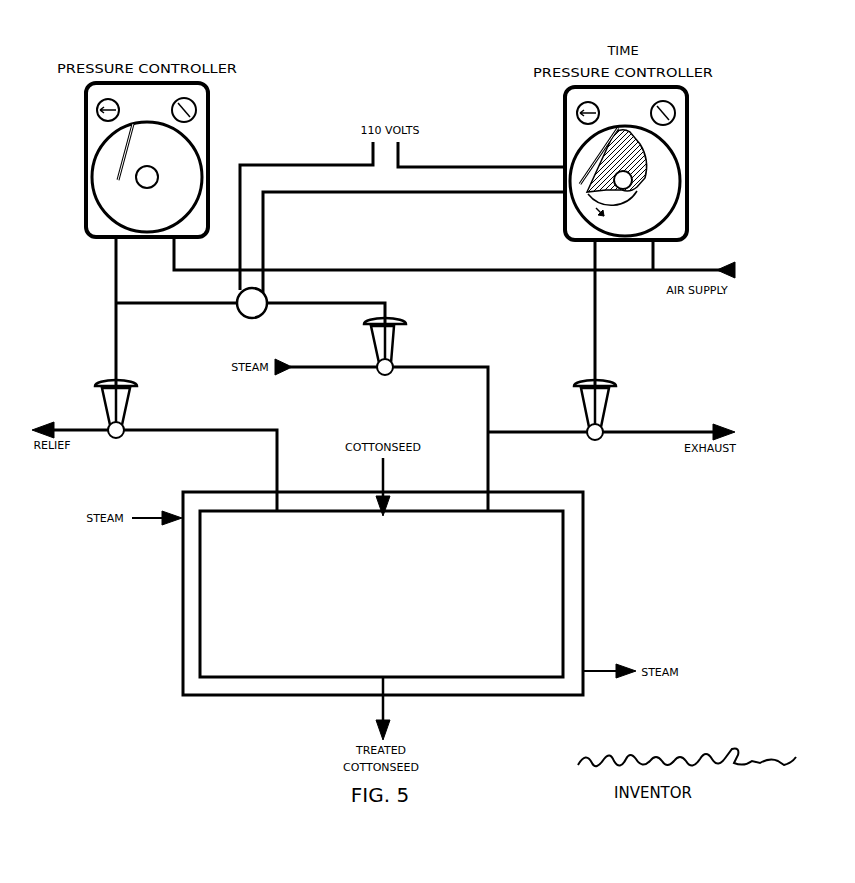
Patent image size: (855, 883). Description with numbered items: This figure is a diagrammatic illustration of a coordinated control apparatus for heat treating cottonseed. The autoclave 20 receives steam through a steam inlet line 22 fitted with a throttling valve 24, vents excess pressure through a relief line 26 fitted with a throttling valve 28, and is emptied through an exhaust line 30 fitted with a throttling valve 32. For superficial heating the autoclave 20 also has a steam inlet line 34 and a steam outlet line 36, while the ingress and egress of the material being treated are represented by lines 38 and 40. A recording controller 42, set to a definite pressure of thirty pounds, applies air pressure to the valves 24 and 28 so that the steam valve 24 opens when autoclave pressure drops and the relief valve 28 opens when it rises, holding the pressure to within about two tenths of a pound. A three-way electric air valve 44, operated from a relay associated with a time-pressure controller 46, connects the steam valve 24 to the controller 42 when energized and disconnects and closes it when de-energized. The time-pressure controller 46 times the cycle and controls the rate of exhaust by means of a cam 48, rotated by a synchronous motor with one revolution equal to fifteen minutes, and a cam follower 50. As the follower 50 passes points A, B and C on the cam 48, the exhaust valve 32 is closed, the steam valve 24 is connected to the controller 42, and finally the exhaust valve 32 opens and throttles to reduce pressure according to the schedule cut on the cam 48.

The autoclave 20 is at (358, 634).
The steam inlet line 22 is at (303, 364).
The throttling valve 24 is at (400, 346).
The relief line 26 is at (183, 428).
The throttling valve 28 is at (132, 410).
The exhaust line 30 is at (510, 430).
The throttling valve 32 is at (608, 415).
The steam inlet line 34 is at (153, 506).
The steam outlet line 36 is at (592, 668).
The line 38 is at (387, 478).
The line 40 is at (388, 707).
The recording controller 42 is at (207, 125).
The 3-way electric air valve 44 is at (240, 312).
The time-pressure controller 46 is at (685, 130).
The cam 48 is at (643, 150).
The cam follower 50 is at (583, 182).